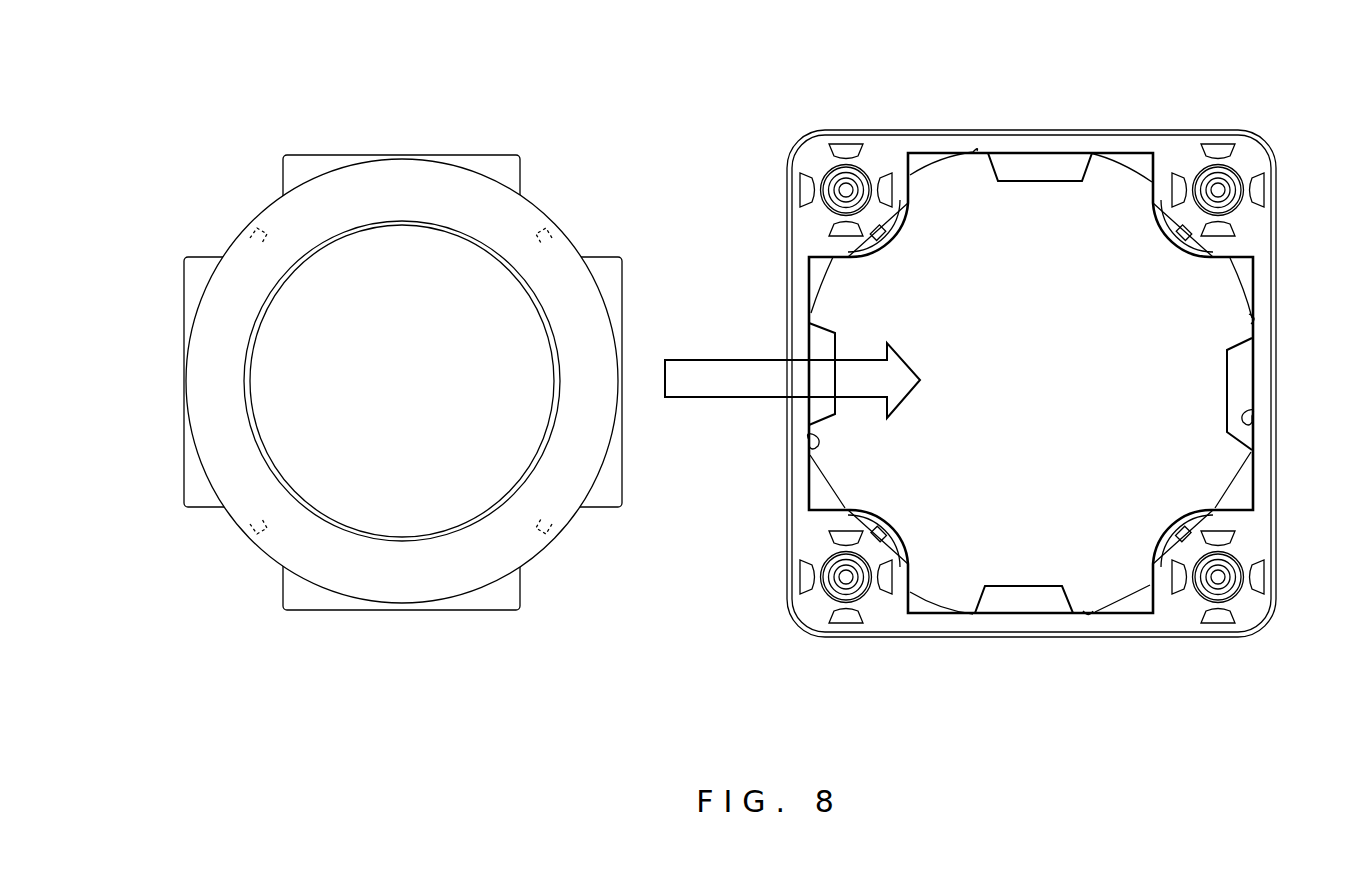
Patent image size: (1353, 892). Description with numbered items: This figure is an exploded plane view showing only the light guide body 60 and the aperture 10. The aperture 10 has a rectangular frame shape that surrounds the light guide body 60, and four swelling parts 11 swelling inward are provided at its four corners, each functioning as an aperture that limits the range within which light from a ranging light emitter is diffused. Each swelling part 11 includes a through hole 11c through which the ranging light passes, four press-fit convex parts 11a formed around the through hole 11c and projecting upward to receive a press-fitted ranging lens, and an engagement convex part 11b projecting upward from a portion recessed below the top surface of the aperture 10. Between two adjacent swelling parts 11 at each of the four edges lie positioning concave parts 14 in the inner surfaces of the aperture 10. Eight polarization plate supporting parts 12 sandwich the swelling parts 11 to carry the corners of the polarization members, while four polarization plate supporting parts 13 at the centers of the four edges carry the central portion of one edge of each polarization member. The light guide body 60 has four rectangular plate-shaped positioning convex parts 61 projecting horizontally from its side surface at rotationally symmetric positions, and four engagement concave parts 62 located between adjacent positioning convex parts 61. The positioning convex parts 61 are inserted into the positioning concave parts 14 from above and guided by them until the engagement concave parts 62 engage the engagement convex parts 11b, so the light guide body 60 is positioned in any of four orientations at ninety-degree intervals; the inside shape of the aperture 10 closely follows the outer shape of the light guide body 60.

The aperture 10 is at (796, 632).
The swelling part 11 is at (916, 152).
The press-fit convex part 11a is at (848, 144).
The engagement convex part 11b is at (836, 254).
The through hole 11c is at (824, 170).
The polarization plate supporting part 12 is at (938, 165).
The polarization plate supporting part 13 is at (1036, 166).
The positioning concave part 14 is at (1092, 160).
The light guide body 60 is at (273, 574).
The positioning convex part 61 is at (322, 160).
The engagement concave part 62 is at (255, 228).